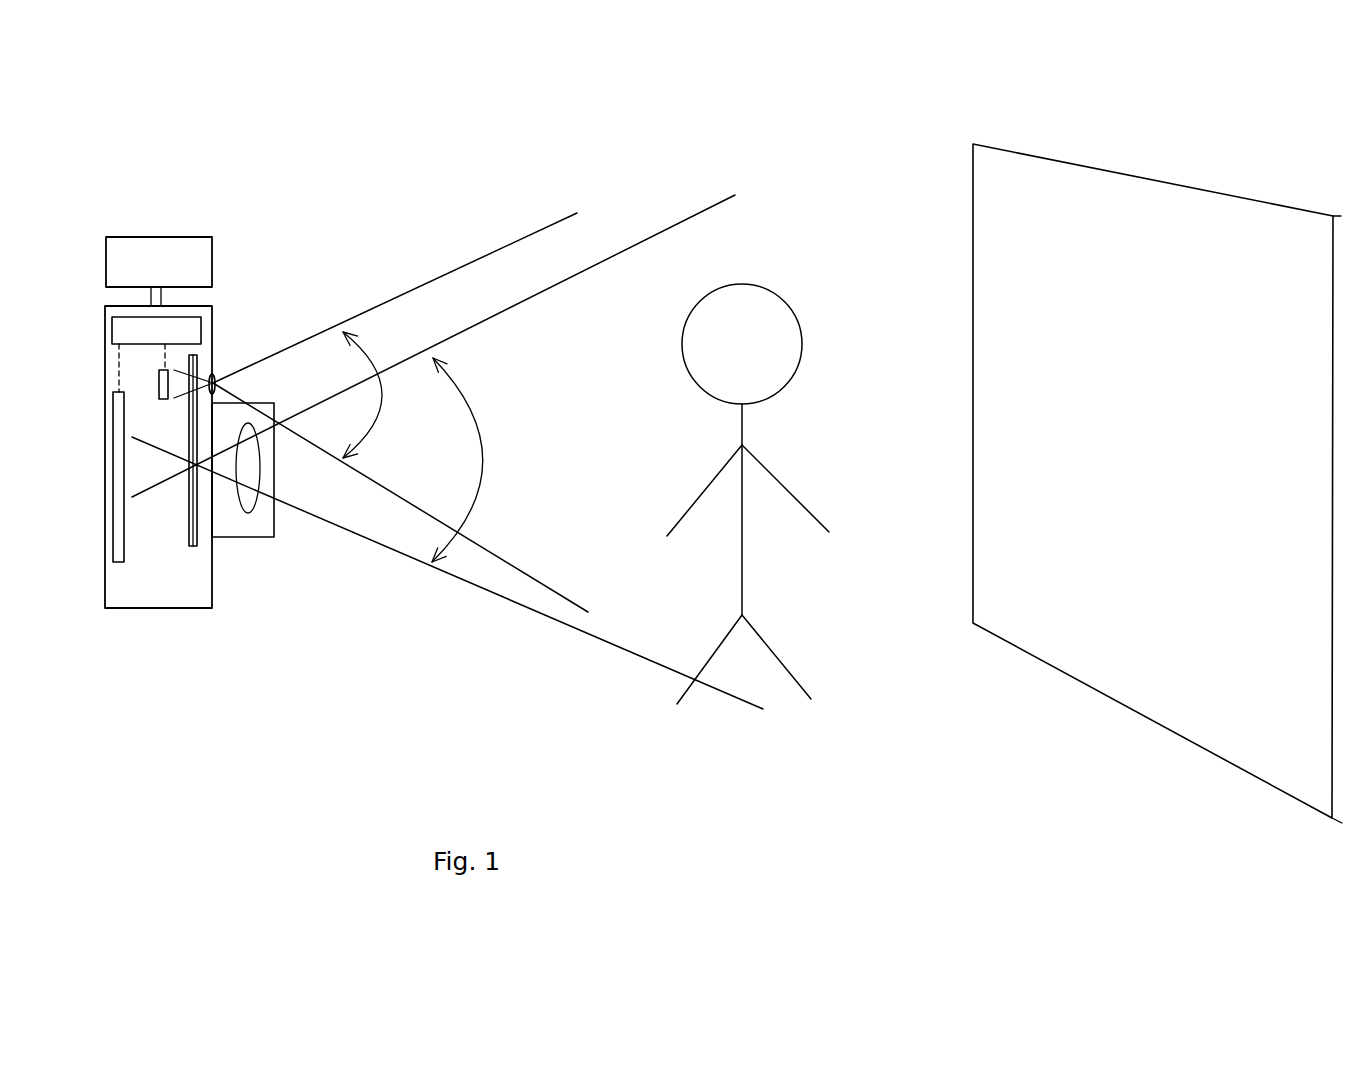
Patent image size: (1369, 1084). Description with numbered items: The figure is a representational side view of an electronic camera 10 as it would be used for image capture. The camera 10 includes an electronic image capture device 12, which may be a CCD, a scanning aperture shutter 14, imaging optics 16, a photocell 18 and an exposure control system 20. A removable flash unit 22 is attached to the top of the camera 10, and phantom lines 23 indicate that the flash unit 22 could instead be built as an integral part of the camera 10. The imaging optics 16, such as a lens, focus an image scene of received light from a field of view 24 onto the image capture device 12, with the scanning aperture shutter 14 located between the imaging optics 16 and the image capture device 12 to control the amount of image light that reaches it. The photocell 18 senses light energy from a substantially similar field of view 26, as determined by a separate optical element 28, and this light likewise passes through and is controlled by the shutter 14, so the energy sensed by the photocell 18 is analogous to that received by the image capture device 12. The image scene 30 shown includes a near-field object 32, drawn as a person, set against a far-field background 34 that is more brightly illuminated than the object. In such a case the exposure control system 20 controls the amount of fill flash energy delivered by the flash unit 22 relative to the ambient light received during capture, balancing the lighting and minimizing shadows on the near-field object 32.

The electronic camera 10 is at (318, 573).
The electronic image capture device 12 is at (113, 537).
The scanning aperture shutter 14 is at (192, 547).
The imaging optics 16 is at (274, 522).
The photocell 18 is at (165, 383).
The exposure control system 20 is at (140, 332).
The flash unit 22 is at (178, 253).
The phantom lines 23 is at (104, 294).
The field of view 24 is at (483, 475).
The field of view 26 is at (370, 355).
The optical element 28 is at (217, 372).
The image scene 30 is at (468, 242).
The near-field object 32 is at (749, 438).
The far-field background 34 is at (1015, 679).